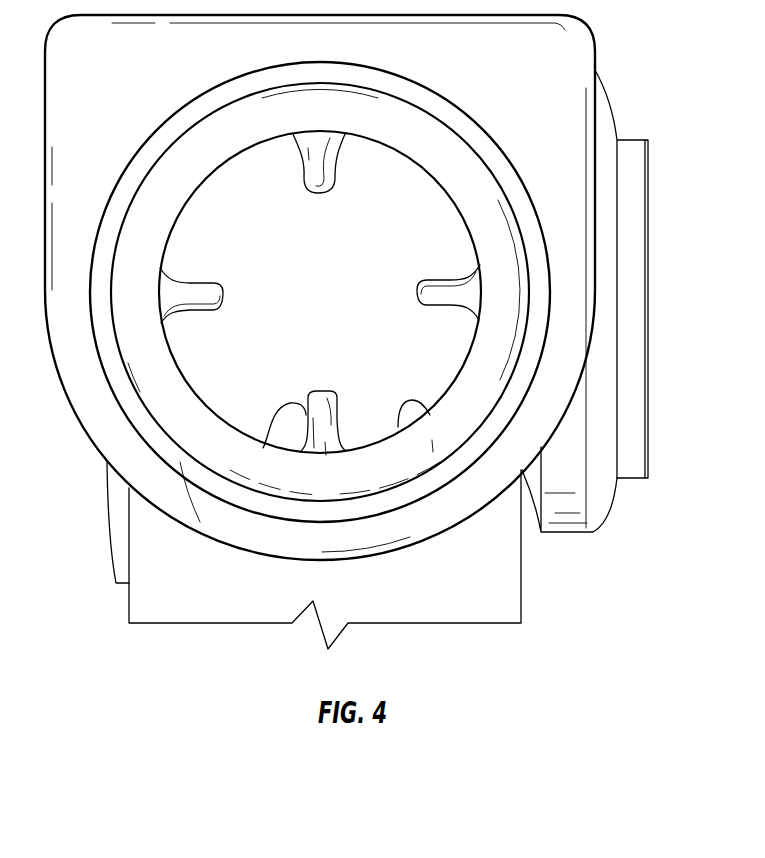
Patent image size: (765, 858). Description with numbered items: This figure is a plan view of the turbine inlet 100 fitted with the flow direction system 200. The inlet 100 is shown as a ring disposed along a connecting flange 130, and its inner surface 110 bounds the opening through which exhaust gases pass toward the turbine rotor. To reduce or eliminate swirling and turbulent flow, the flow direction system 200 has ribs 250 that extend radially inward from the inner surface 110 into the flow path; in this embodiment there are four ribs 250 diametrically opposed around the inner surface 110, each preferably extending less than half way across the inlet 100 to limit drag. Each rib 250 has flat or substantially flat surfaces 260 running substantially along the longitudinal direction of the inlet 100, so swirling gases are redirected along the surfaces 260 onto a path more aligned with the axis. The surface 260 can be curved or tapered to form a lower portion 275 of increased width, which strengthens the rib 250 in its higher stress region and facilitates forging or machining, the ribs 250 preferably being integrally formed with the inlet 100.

The inlet 100 is at (478, 94).
The inner surface 110 is at (424, 405).
The connecting flange 130 is at (131, 84).
The flow direction system 200 is at (382, 463).
The ribs 250 is at (327, 438).
The flat surfaces 260 is at (264, 447).
The lower portion 275 is at (160, 290).